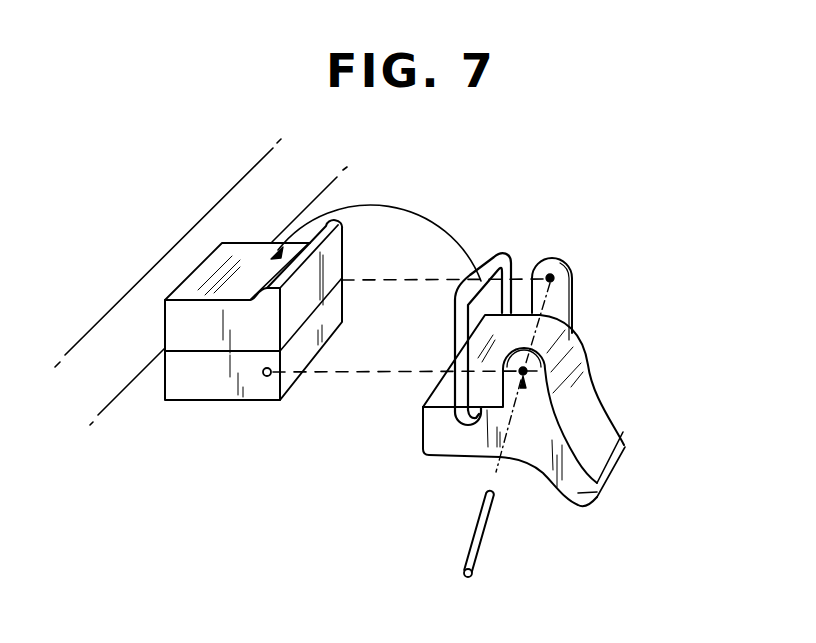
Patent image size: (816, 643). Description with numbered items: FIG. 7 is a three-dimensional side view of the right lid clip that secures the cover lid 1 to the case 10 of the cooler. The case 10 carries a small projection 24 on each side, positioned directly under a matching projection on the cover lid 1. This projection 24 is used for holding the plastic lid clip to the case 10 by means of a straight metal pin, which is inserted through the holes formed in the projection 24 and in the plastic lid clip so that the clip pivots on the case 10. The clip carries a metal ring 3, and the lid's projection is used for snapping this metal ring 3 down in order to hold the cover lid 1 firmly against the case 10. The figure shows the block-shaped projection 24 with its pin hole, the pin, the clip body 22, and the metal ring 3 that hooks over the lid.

The cover lid 1 is at (166, 279).
The case 10 is at (139, 394).
The small projection 24 is at (220, 382).
The metal ring 3 is at (495, 256).
The plate 22 is at (598, 497).